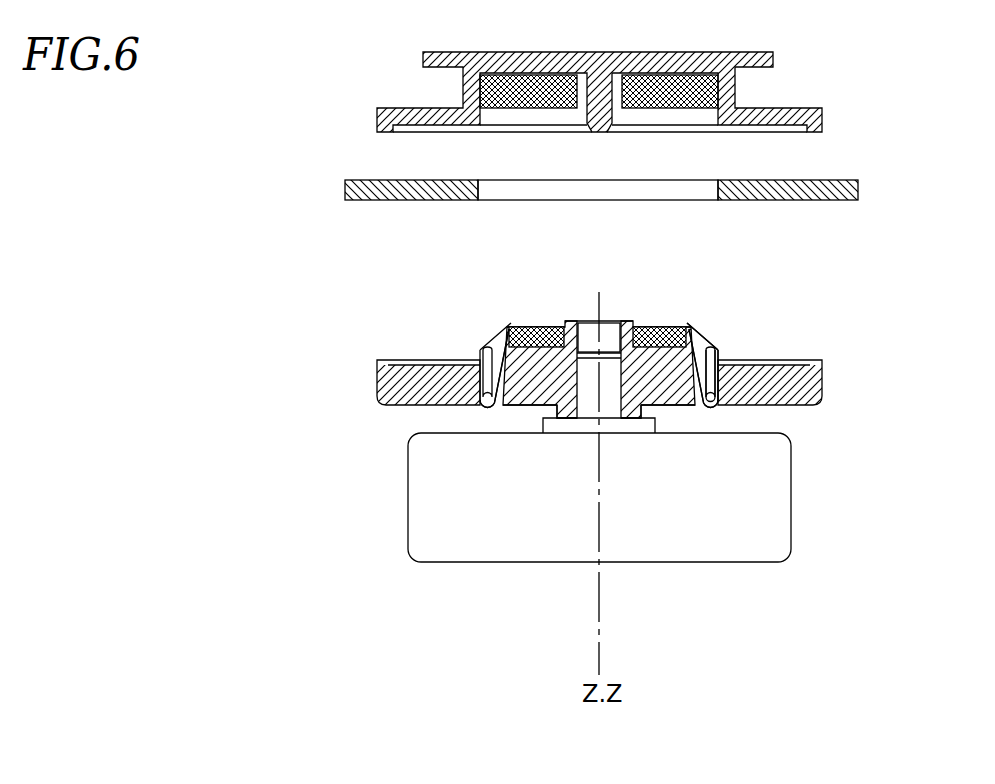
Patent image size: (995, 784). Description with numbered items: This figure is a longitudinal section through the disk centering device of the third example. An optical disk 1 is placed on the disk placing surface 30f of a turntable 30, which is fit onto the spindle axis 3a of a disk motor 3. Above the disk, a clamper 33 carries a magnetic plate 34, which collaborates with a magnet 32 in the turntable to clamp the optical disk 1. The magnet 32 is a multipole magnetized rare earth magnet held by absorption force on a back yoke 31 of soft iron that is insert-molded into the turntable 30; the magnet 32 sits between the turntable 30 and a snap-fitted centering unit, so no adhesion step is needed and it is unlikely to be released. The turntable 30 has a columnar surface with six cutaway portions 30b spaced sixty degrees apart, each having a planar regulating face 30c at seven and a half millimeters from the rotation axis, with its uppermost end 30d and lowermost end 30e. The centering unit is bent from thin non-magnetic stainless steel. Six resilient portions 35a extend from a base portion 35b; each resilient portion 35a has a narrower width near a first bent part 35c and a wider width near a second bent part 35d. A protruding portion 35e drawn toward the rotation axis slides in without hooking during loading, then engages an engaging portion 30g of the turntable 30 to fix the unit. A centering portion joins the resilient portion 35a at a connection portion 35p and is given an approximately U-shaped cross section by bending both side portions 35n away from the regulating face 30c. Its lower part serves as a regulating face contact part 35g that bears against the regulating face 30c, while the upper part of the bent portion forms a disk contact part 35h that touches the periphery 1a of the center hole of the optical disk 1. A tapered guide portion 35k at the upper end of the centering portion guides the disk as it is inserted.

The optical disk 1 is at (532, 187).
The periphery of the center hole 1a is at (479, 200).
The disk motor 3 is at (452, 545).
The spindle axis 3a is at (610, 405).
The turntable 30 is at (521, 460).
The cutaway portion 30b is at (487, 402).
The regulating face 30c is at (480, 406).
The uppermost end of the regulating face 30d is at (397, 405).
The lowermost end of the regulating face 30e is at (490, 405).
The disk placing surface 30f is at (480, 352).
The engaging portion 30g is at (507, 404).
The back yoke 31 is at (505, 327).
The magnet 32 is at (517, 323).
The clamper 33 is at (377, 108).
The magnetic plate 34 is at (738, 85).
The resilient portion 35a is at (707, 408).
The base portion 35b is at (683, 323).
The first bent part 35c is at (745, 407).
The second bent part 35d is at (693, 323).
The protruding portion 35e is at (700, 404).
The regulating face contact part 35g is at (713, 388).
The disk contact part 35h is at (720, 358).
The guide portion 35k is at (714, 344).
The side portions 35n is at (722, 406).
The connection portion 35p is at (730, 407).